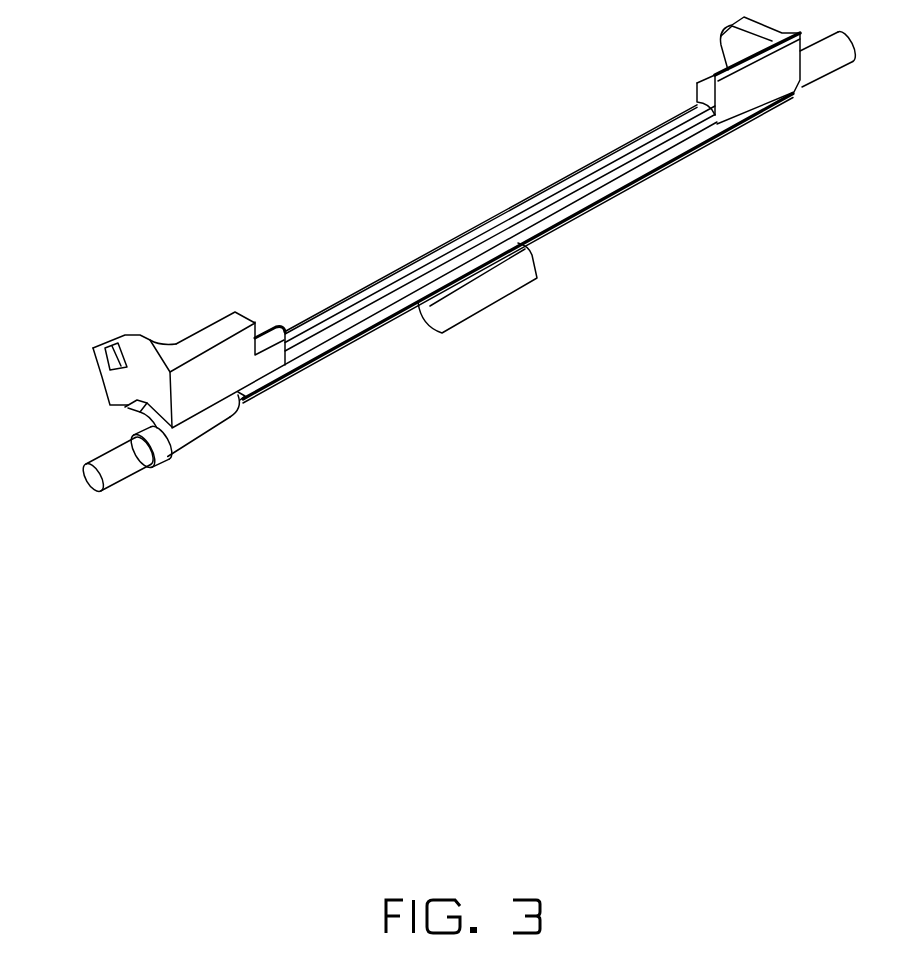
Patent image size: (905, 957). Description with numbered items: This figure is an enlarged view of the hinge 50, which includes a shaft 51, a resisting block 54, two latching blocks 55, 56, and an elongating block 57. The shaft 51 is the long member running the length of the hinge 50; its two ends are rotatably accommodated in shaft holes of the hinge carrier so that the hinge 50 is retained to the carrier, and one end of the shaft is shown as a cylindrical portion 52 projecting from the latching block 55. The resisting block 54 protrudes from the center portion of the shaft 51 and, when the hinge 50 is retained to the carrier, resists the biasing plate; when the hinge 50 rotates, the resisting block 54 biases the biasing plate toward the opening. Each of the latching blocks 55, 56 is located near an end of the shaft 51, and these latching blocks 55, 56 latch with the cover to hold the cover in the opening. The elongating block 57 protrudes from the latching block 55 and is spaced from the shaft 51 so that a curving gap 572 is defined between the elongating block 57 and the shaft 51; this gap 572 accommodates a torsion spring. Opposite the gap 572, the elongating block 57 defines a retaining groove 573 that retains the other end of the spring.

The hinge 50 is at (416, 88).
The shaft 51 is at (470, 250).
The shaft 52 is at (187, 432).
The resisting block 54 is at (485, 287).
The latching block 55 is at (275, 343).
The latching block 56 is at (737, 88).
The elongating block 57 is at (190, 392).
The curving gap 572 is at (142, 403).
The retaining groove 573 is at (110, 352).